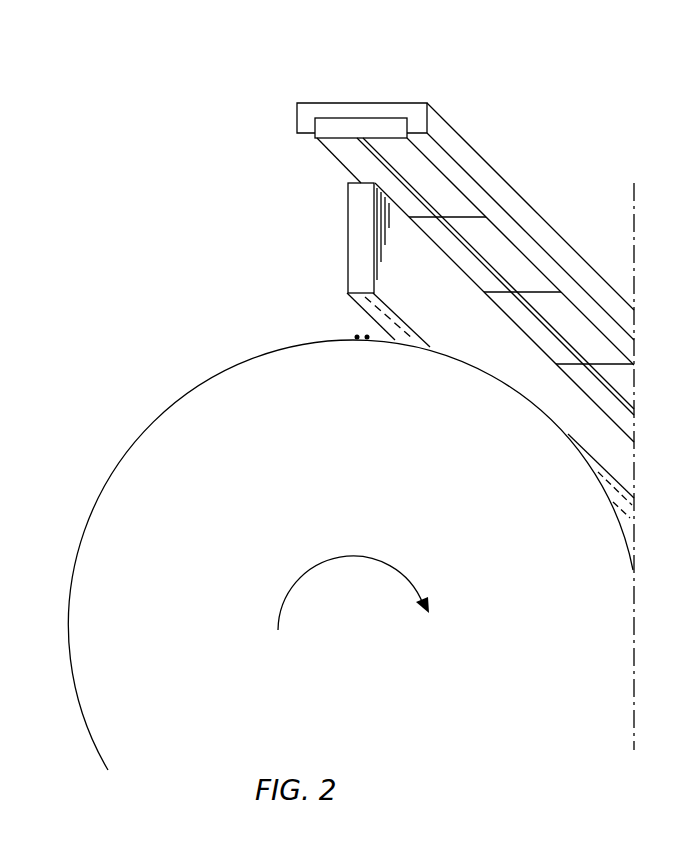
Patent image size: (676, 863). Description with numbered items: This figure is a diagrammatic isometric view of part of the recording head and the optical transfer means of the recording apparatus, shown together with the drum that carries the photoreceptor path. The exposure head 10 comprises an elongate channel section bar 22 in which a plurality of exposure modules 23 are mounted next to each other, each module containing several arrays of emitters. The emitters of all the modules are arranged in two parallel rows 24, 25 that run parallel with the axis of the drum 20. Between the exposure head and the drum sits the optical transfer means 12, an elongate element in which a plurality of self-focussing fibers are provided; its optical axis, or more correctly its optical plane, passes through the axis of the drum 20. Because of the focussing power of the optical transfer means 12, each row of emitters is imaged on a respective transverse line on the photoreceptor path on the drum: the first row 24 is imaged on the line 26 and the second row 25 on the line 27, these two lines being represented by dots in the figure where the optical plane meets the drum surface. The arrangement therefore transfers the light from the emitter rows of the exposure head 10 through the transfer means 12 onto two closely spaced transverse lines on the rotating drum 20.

The exposure head 10 is at (452, 68).
The optical transfer means 12 is at (357, 232).
The drum 20 is at (103, 512).
The elongate channel section bar 22 is at (297, 112).
The exposure modules 23 is at (490, 240).
The row of emitters 24 is at (372, 150).
The row of emitters 25 is at (355, 148).
The transverse line 26 is at (367, 337).
The transverse line 27 is at (357, 337).